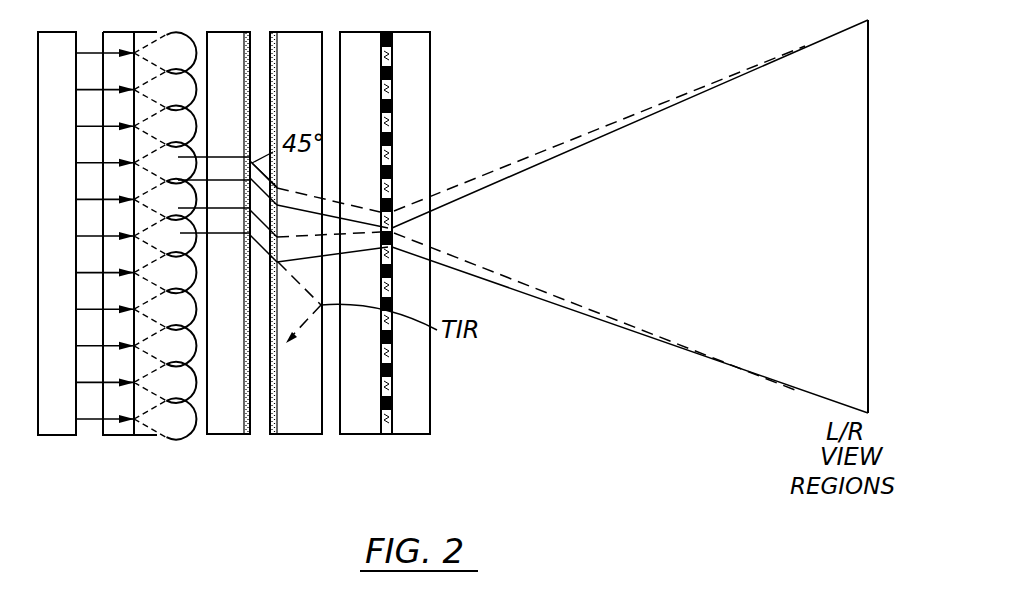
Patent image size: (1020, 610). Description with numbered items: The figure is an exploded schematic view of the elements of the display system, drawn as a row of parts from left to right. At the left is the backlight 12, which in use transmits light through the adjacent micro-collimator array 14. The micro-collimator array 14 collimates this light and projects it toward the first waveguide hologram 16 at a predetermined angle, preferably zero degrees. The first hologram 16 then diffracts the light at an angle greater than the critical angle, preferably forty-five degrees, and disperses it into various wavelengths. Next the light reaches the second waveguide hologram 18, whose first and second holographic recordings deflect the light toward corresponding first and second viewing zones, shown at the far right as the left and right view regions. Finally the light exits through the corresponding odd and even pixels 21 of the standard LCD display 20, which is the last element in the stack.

The backlight 12 is at (50, 436).
The micro-collimator array 14 is at (122, 436).
The first waveguide hologram 16 is at (242, 434).
The second waveguide hologram 18 is at (312, 434).
The LCD display 20 is at (411, 269).
The pixels 21 is at (393, 390).